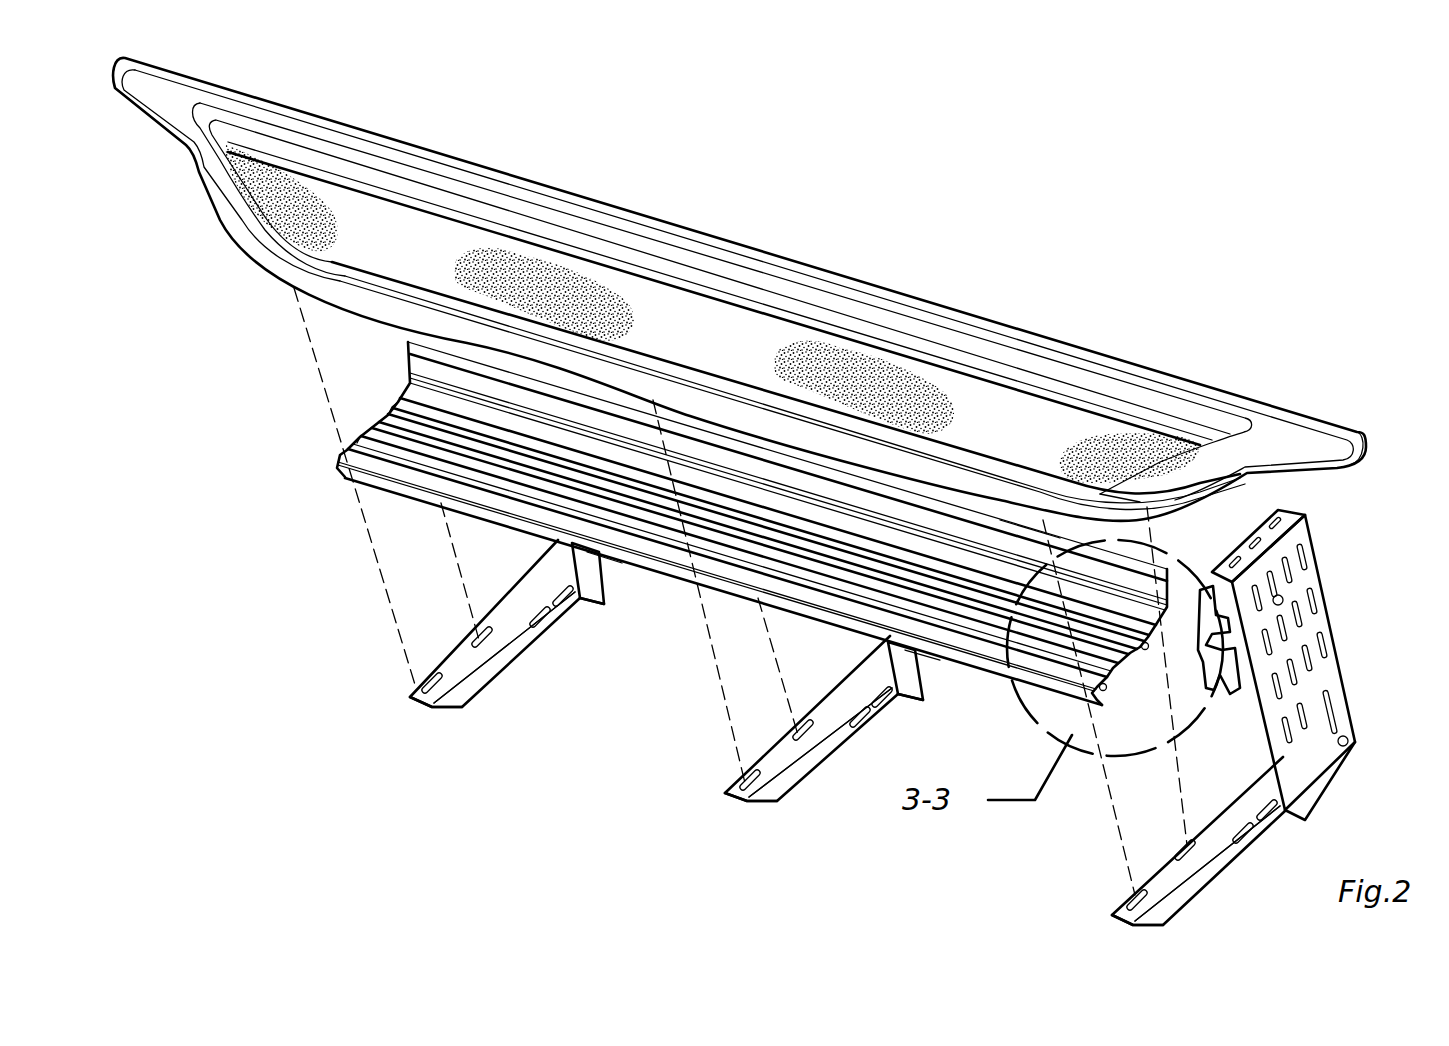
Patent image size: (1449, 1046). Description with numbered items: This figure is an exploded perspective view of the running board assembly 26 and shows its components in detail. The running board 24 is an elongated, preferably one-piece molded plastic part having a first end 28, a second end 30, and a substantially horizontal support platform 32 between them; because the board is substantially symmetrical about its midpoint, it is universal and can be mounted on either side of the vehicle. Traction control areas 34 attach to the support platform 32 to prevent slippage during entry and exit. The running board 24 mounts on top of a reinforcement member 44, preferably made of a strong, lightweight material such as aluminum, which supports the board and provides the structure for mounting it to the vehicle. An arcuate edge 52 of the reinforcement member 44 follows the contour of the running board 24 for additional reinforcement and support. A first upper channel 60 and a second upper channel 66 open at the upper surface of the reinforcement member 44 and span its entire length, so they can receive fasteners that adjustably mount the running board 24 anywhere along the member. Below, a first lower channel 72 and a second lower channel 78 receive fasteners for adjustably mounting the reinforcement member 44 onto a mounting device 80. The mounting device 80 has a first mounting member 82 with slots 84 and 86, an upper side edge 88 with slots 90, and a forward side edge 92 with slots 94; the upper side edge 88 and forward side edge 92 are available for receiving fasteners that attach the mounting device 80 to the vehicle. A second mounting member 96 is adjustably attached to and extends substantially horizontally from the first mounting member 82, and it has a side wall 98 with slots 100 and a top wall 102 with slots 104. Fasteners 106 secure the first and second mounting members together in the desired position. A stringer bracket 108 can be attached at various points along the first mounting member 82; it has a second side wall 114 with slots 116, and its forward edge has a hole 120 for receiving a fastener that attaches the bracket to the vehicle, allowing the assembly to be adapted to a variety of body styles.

The running board 24 is at (798, 235).
The running board assembly 26 is at (1168, 268).
The first end 28 is at (137, 105).
The second end 30 is at (1360, 440).
The support platform 32 is at (437, 257).
The traction control areas 34 is at (500, 273).
The reinforcement member 44 is at (350, 490).
The arcuate edge 52 is at (1035, 548).
The first upper channel 60 is at (358, 437).
The second upper channel 66 is at (390, 408).
The first lower channel 72 is at (1110, 756).
The second lower channel 78 is at (1147, 650).
The mounting device 80 is at (1329, 642).
The first mounting member 82 is at (614, 594).
The slot 84 is at (1335, 662).
The slot 86 is at (1337, 715).
The upper side edge 88 is at (1280, 528).
The slots 90 is at (1252, 530).
The forward side edge 92 is at (590, 600).
The slots 94 is at (1268, 722).
The second mounting member 96 is at (474, 698).
The side wall 98 is at (500, 657).
The slots 100 is at (562, 598).
The top wall 102 is at (520, 600).
The slots 104 is at (482, 630).
The fasteners 106 is at (1357, 744).
The stringer bracket 108 is at (1225, 702).
The second side wall 114 is at (1215, 610).
The slots 116 is at (1222, 578).
The hole 120 is at (1197, 662).